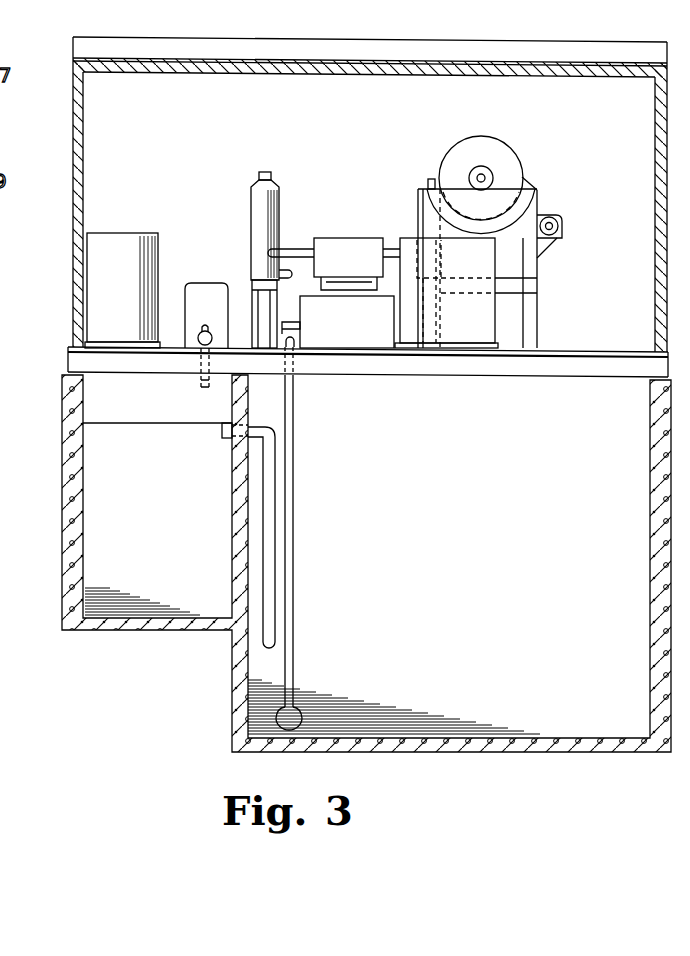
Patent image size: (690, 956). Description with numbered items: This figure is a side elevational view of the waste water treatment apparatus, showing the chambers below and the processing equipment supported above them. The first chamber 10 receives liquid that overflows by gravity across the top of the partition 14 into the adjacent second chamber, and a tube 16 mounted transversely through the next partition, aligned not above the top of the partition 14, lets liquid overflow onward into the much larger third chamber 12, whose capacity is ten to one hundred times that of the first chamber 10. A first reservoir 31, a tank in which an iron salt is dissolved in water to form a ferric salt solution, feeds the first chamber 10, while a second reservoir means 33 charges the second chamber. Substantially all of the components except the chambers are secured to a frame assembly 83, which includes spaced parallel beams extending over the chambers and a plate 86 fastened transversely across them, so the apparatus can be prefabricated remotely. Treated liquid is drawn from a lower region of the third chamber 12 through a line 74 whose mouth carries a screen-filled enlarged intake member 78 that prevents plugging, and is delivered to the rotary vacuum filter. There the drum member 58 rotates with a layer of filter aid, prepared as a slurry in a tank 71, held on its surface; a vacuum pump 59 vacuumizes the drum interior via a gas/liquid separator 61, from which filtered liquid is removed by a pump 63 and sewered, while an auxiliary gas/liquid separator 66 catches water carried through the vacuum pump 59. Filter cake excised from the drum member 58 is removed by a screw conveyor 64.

The first chamber 10 is at (167, 526).
The third chamber 12 is at (480, 552).
The partition 14 is at (138, 423).
The tube 16 is at (272, 510).
The first reservoir 31 is at (115, 233).
The second reservoir means 33 is at (195, 283).
The drum member 58 is at (513, 162).
The vacuum pump 59 is at (340, 245).
The gas/liquid separator 61 is at (418, 205).
The pump 63 is at (370, 338).
The screw conveyor 64 is at (557, 238).
The auxiliary gas/liquid separator 66 is at (251, 210).
The tank 71 is at (475, 340).
The line 74 is at (295, 417).
The enlarged intake member 78 is at (298, 712).
The frame assembly 83 is at (75, 360).
The plate 86 is at (575, 350).